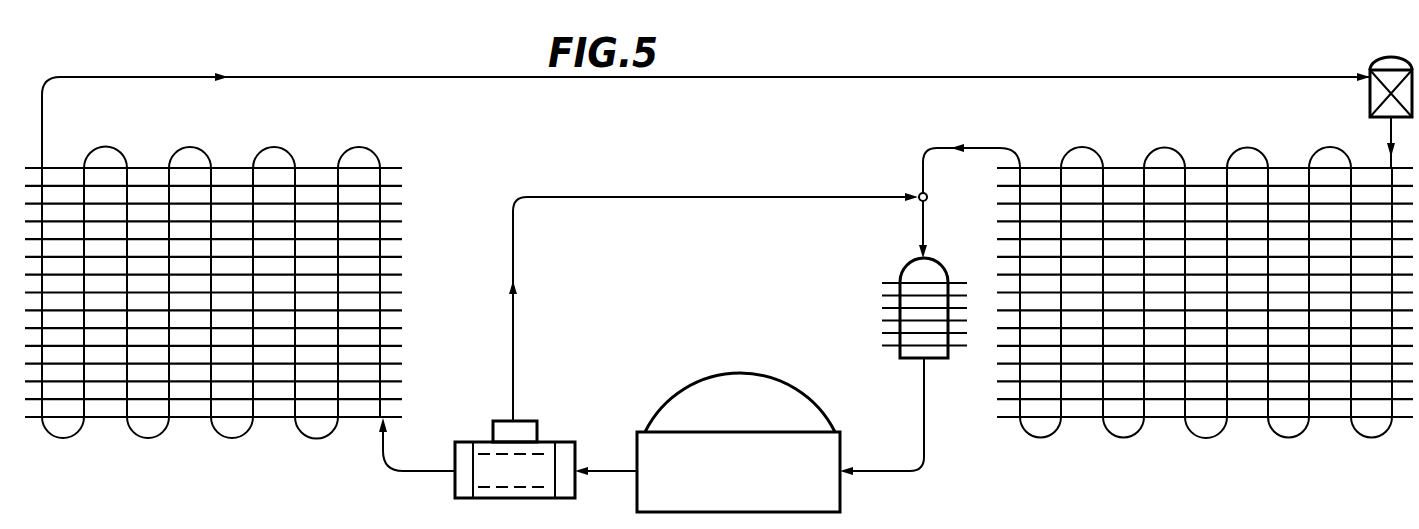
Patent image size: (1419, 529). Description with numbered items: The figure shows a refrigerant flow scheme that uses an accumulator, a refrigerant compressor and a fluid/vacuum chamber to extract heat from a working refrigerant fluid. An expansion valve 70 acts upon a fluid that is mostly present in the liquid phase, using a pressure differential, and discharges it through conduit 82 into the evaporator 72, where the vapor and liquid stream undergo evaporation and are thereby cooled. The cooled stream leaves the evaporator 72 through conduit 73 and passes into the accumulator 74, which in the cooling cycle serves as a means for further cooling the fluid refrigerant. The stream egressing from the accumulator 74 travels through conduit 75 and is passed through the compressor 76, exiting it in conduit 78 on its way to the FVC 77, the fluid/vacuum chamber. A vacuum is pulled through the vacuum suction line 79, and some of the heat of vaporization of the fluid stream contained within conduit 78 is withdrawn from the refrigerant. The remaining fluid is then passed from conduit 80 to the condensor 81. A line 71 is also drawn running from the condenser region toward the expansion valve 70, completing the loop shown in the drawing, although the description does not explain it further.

The expansion valve 70 is at (1370, 97).
The condenser outlet line to expansion valve 71 is at (1035, 78).
The evaporator 72 is at (1307, 449).
The conduit 73 is at (945, 145).
The accumulator 74 is at (826, 308).
The conduit 75 is at (925, 462).
The compressor 76 is at (843, 437).
The FVC 77 is at (550, 442).
The conduit 78 is at (620, 470).
The vacuum suction line 79 is at (647, 197).
The conduit 80 is at (428, 471).
The condensor 81 is at (272, 444).
The conduit 82 is at (1391, 129).